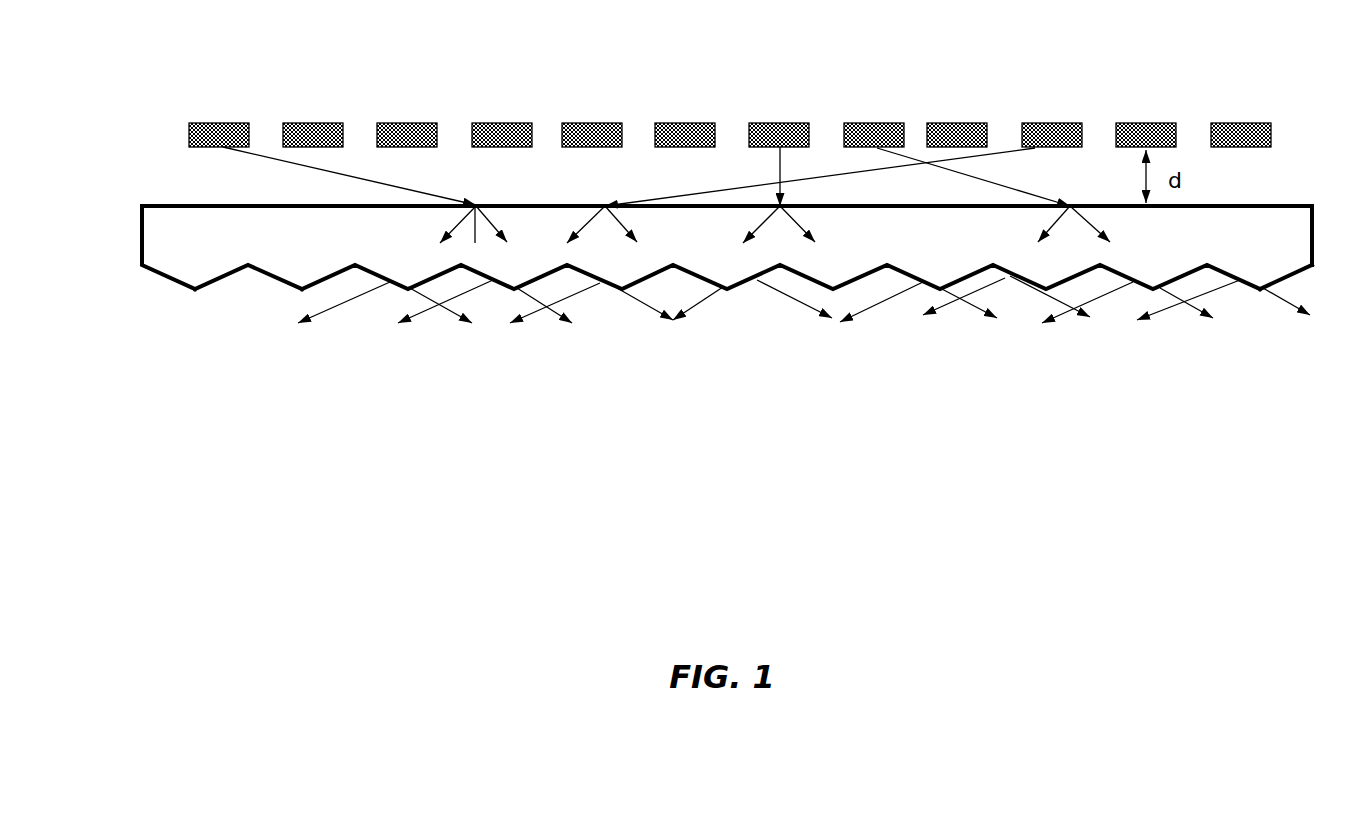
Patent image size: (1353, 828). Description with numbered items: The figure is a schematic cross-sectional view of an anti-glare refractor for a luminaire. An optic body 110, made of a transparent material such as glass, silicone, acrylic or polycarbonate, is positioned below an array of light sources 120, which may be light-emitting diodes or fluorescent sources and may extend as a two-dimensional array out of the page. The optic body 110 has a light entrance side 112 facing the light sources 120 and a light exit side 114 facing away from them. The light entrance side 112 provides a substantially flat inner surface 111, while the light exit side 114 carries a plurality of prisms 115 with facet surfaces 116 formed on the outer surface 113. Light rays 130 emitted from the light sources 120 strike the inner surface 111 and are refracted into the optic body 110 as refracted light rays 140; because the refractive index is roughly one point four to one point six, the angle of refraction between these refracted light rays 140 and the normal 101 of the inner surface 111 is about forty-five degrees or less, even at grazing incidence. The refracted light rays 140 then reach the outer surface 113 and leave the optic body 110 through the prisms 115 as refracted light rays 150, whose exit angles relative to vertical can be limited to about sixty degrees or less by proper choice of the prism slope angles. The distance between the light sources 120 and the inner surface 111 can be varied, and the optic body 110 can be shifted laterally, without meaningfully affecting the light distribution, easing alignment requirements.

The normal 101 is at (475, 170).
The optic body 110 is at (700, 270).
The inner surface 111 is at (1277, 202).
The light entrance side 112 is at (176, 190).
The outer surface 113 is at (1293, 275).
The light exit side 114 is at (170, 302).
The prisms 115 is at (845, 270).
The facet surfaces 116 is at (270, 277).
The light sources 120 is at (223, 122).
The light rays 130 is at (318, 173).
The refracted light rays 140 is at (460, 220).
The refracted light rays 150 is at (342, 308).